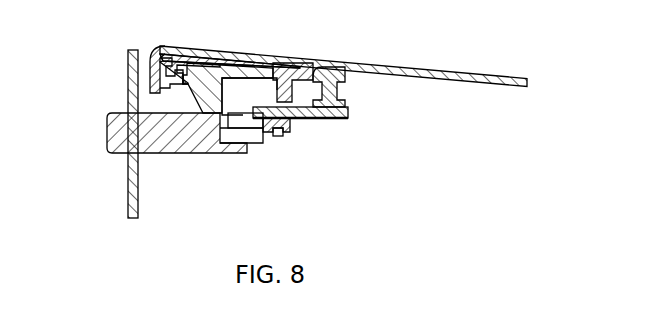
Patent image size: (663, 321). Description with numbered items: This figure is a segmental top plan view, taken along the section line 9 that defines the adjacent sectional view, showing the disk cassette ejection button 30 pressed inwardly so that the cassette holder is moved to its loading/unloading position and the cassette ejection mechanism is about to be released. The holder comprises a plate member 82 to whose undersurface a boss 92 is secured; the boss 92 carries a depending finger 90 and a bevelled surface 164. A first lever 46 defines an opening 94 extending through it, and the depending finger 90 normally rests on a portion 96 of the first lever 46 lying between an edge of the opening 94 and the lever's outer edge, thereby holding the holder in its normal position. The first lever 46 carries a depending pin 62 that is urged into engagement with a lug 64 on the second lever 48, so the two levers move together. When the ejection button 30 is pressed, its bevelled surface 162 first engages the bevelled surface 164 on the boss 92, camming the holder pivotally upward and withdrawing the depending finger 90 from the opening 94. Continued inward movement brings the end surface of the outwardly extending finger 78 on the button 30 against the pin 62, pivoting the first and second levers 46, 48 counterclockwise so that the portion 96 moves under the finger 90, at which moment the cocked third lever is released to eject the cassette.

The section line 9- 9 is at (27, 96).
The disk cassette ejection button 30 is at (113, 133).
The first lever 46 is at (342, 70).
The second lever 48 is at (337, 122).
The depending pin 62 is at (265, 144).
The lug 64 is at (279, 136).
The outwardly extending finger 78 is at (255, 137).
The plate member 82 is at (437, 73).
The depending finger 90 is at (279, 56).
The boss 92 is at (212, 48).
The opening 94 is at (288, 120).
The portion of first lever 96 is at (262, 108).
The bevelled surface 162 is at (202, 153).
The bevelled surface 164 is at (213, 131).